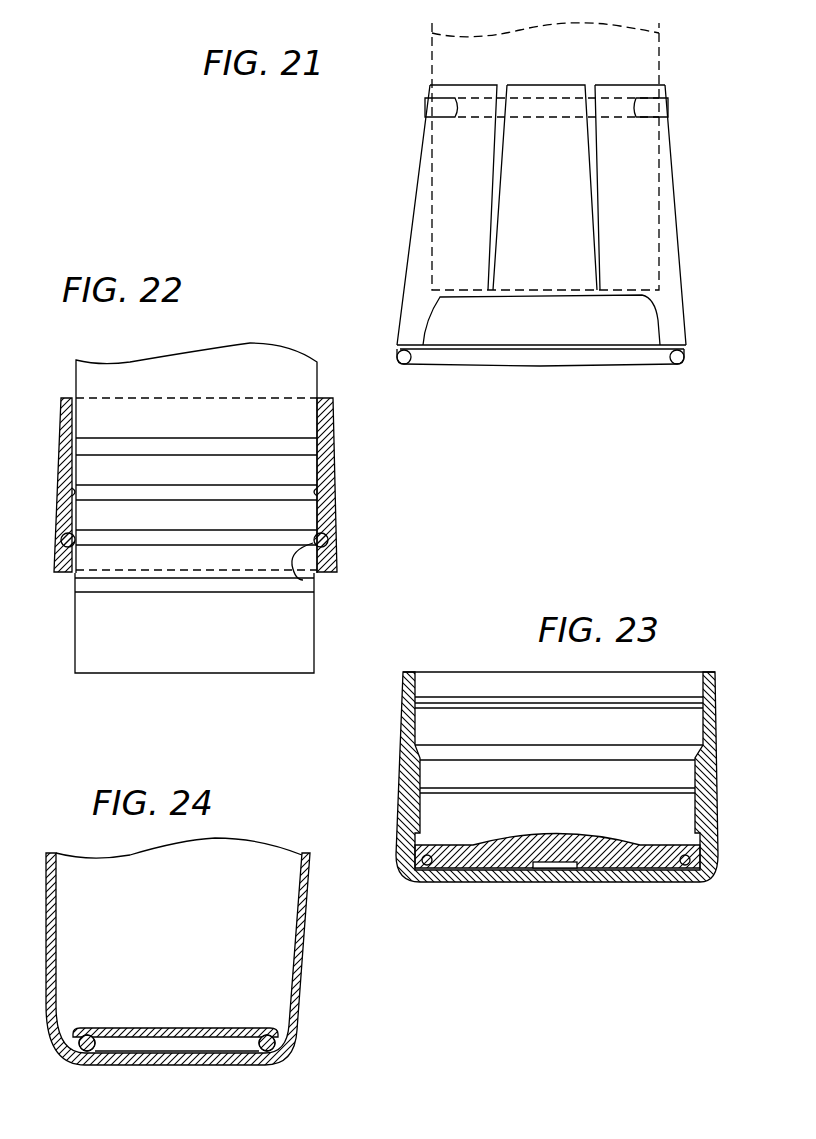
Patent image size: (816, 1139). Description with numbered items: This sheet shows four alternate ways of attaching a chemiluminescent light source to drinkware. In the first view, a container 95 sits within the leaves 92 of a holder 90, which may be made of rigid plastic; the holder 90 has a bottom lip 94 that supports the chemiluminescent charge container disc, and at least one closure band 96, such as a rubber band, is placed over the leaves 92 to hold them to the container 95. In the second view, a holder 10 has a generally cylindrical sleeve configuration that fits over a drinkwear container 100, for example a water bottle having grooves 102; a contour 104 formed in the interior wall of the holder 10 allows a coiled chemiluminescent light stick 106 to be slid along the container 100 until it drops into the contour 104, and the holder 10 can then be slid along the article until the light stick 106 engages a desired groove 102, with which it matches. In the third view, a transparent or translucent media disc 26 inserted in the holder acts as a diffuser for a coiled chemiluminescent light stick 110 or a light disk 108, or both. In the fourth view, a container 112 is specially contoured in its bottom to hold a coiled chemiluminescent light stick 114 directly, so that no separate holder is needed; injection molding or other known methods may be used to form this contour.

In FIG. 22, the holder 10 is at (370, 550).
In FIG. 23, the disc 26 is at (612, 862).
In FIG. 21, the holder 90 is at (380, 135).
In FIG. 21, the leaves 92 is at (412, 210).
In FIG. 21, the bottom lip 94 is at (412, 363).
In FIG. 21, the container 95 is at (432, 58).
In FIG. 21, the closure band 96 is at (425, 105).
In FIG. 22, the drinkwear container 100 is at (268, 345).
In FIG. 22, the grooves 102 is at (288, 488).
In FIG. 22, the contour 104 is at (325, 535).
In FIG. 22, the light stick 106 is at (307, 577).
In FIG. 23, the light disk 108 is at (538, 868).
In FIG. 23, the light stick 110 is at (428, 862).
In FIG. 24, the container 112 is at (307, 1028).
In FIG. 24, the light stick 114 is at (100, 1048).